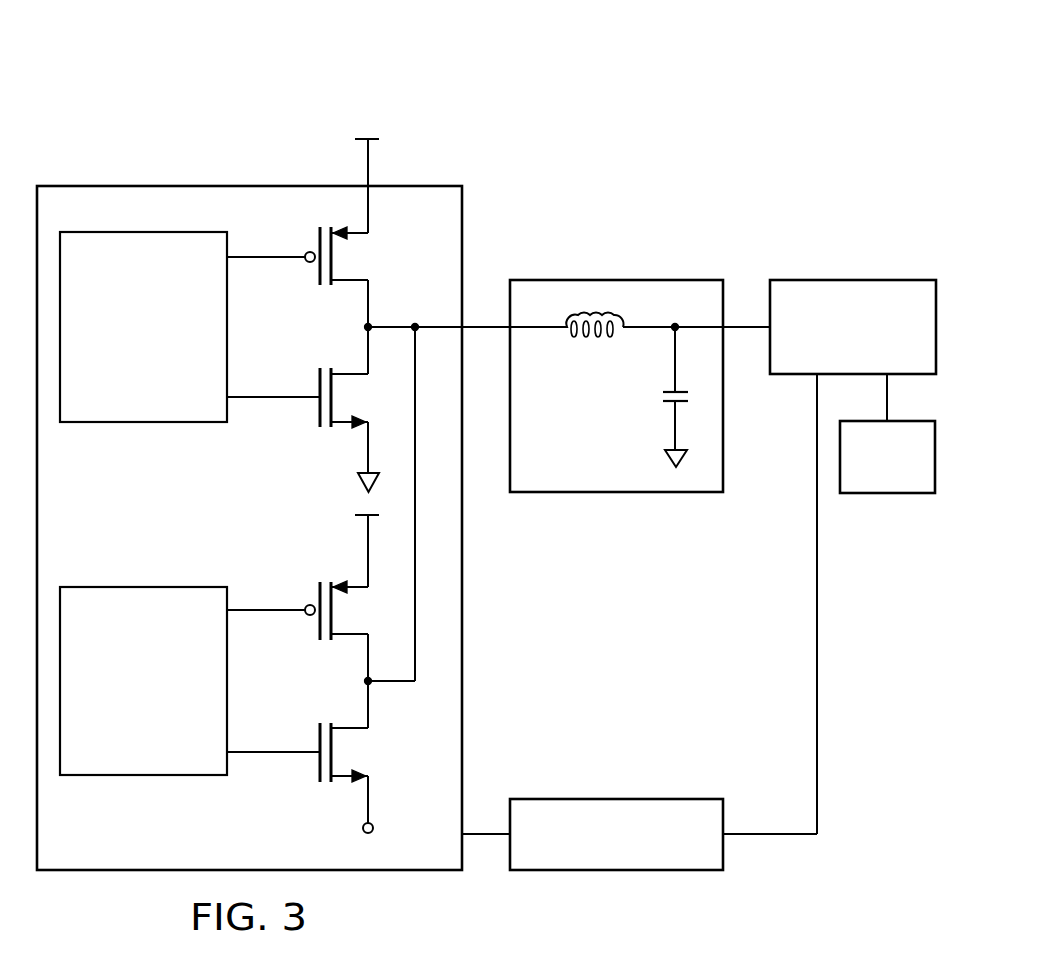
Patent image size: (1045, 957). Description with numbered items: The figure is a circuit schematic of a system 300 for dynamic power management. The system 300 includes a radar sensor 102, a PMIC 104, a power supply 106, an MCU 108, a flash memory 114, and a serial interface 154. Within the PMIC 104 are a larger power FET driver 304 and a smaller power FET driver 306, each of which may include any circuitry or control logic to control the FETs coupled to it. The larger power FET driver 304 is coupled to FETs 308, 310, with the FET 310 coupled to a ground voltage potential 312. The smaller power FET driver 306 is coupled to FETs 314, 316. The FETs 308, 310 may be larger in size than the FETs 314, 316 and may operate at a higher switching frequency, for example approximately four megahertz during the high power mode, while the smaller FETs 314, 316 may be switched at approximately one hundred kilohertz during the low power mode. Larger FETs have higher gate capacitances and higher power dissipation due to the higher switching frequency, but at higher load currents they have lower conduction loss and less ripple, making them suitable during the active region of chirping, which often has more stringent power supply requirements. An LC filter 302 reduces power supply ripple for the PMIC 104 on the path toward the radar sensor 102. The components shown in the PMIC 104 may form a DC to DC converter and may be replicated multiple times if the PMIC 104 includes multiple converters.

The system 300 is at (364, 71).
The PMIC 104 is at (161, 179).
The power supply 106 is at (366, 140).
The larger power FET driver 304 is at (143, 424).
The smaller power FET driver 306 is at (143, 777).
The FET 308 is at (317, 240).
The FET 310 is at (317, 380).
The ground voltage potential 312 is at (357, 479).
The FET 314 is at (317, 617).
The FET 316 is at (317, 758).
The LC filter 302 is at (642, 272).
The radar sensor 102 is at (852, 279).
The flash memory 114 is at (905, 495).
The MCU 108 is at (615, 872).
The serial interface 154 is at (768, 838).